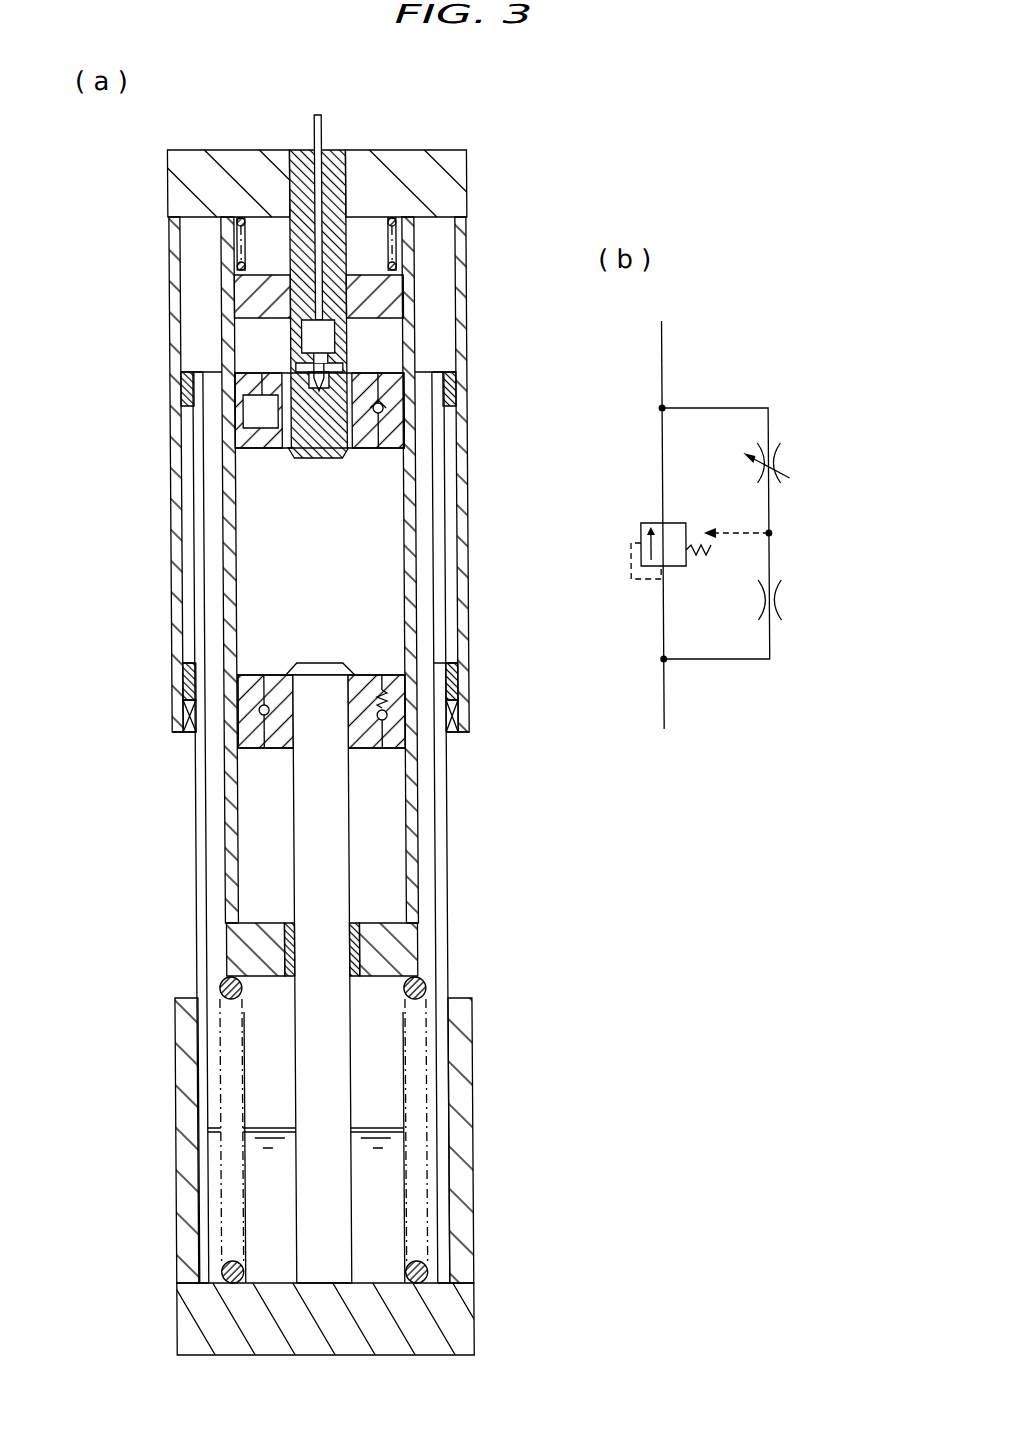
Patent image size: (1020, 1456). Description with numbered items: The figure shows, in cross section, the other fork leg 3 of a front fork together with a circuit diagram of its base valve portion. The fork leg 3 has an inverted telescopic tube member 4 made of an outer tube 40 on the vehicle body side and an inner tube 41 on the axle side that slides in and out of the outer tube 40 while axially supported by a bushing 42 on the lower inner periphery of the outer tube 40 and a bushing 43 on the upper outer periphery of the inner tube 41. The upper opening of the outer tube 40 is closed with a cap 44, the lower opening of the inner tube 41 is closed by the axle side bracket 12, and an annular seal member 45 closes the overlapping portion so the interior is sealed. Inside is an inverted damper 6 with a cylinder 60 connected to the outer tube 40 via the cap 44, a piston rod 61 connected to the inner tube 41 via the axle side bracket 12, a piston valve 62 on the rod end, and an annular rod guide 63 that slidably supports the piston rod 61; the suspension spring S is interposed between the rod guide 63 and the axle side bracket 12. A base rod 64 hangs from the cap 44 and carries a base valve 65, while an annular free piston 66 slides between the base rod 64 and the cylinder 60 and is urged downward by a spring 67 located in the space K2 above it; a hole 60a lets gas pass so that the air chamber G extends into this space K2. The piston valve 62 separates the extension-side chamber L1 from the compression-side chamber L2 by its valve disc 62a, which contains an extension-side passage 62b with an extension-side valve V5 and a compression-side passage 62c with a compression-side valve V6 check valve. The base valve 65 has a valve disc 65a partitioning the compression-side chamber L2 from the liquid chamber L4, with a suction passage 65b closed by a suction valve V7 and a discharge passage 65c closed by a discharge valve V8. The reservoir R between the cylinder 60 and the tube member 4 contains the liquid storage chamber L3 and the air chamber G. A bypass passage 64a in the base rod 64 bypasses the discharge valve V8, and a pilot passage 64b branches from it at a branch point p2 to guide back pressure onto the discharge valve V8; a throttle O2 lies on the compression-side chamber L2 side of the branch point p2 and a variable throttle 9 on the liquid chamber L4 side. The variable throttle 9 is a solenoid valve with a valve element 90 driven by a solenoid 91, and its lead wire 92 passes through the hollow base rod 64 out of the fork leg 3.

The fork leg 3 is at (476, 170).
The telescopic tube member 4 is at (167, 537).
The damper 6 is at (422, 615).
The variable throttle 9 is at (352, 331).
The axle side bracket 12 is at (185, 1058).
The outer tube 40 is at (469, 565).
The inner tube 41 is at (201, 905).
The bushing 42 is at (186, 680).
The bushing 43 is at (460, 377).
The cap 44 is at (235, 160).
The annular seal member 45 is at (177, 720).
The cylinder 60 is at (225, 583).
The hole 60a is at (231, 225).
The piston rod 61 is at (301, 838).
The piston valve 62 is at (244, 668).
The valve disc 62a is at (407, 668).
The extension-side passage 62b is at (388, 732).
The compression-side passage 62c is at (237, 757).
The rod guide 63 is at (393, 918).
The base rod 64 is at (351, 177).
The bypass passage 64a is at (299, 460).
The pilot passage 64b is at (289, 462).
The base valve 65 is at (397, 458).
The valve disc 65a is at (375, 450).
The suction passage 65b is at (372, 442).
The discharge passage 65c is at (267, 432).
The free piston 66 is at (243, 292).
The spring 67 is at (396, 217).
The valve element 90 is at (334, 460).
The solenoid 91 is at (262, 335).
The lead wire 92 is at (322, 125).
The air chamber G is at (443, 287).
The space K2 is at (455, 257).
The extension-side chamber L1 is at (371, 835).
The compression-side chamber L2 is at (321, 605).
The liquid storage chamber L3 is at (270, 1202).
The liquid chamber L4 is at (249, 352).
The reservoir R is at (396, 1077).
The suspension spring S is at (220, 983).
The extension-side valve V5 is at (388, 712).
The compression-side valve V6 is at (260, 718).
The suction valve V7 is at (388, 410).
The discharge valve V8 is at (249, 418).
The throttle O2 is at (779, 604).
The branch point p2 is at (771, 533).